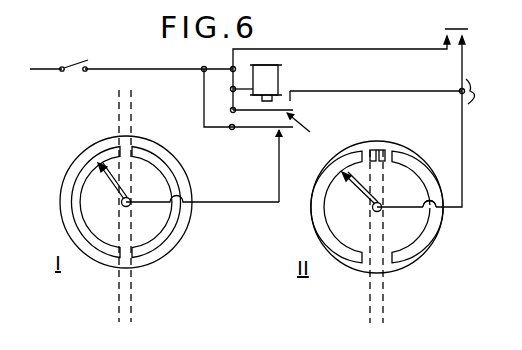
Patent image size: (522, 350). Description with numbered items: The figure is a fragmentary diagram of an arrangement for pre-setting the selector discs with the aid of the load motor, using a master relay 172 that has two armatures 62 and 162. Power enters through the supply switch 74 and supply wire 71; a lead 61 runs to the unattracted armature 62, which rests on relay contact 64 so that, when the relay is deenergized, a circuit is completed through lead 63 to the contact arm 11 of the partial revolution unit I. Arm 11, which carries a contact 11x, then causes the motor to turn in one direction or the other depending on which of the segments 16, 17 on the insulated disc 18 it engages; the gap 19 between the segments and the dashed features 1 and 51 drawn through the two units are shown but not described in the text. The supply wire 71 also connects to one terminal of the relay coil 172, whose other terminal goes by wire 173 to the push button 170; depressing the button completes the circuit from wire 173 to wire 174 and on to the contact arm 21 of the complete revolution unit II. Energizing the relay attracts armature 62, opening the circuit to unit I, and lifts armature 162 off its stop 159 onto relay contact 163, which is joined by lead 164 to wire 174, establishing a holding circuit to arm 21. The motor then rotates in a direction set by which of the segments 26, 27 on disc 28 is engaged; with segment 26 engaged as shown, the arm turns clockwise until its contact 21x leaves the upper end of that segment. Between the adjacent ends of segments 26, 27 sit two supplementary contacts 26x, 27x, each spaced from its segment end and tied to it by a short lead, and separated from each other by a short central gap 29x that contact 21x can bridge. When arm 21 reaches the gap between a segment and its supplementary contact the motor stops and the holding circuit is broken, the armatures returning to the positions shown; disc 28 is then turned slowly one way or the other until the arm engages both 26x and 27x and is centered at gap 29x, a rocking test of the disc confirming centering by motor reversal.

The axis of first motor 1 is at (118, 302).
The contact arm 11 is at (114, 186).
The rotor position mark 11x is at (102, 166).
The segment 16 is at (96, 239).
The segment 17 is at (157, 237).
The insulated disc 18 is at (180, 152).
The pole gap 19 is at (128, 145).
The contact arm 21 is at (362, 194).
The contact 21x is at (350, 175).
The segment 26 is at (352, 242).
The supplementary contact 26x is at (369, 148).
The segment 27 is at (407, 238).
The supplementary contact 27x is at (388, 153).
The insulated disc 28 is at (433, 240).
The central gap 29x is at (378, 147).
The axis of second motor 51 is at (370, 297).
The lead 61 is at (203, 88).
The armature 62 is at (261, 128).
The lead 63 is at (230, 203).
The relay contact 64 is at (284, 135).
The supply wire 71 is at (121, 68).
The supply switch 74 is at (70, 62).
The movable contact 159 is at (315, 130).
The armature 162 is at (292, 108).
The relay contact 163 is at (291, 100).
The lead 164 is at (387, 90).
The push button 170 is at (456, 28).
The master relay 172 is at (272, 76).
The wire 173 is at (292, 49).
The wire 174 is at (484, 91).